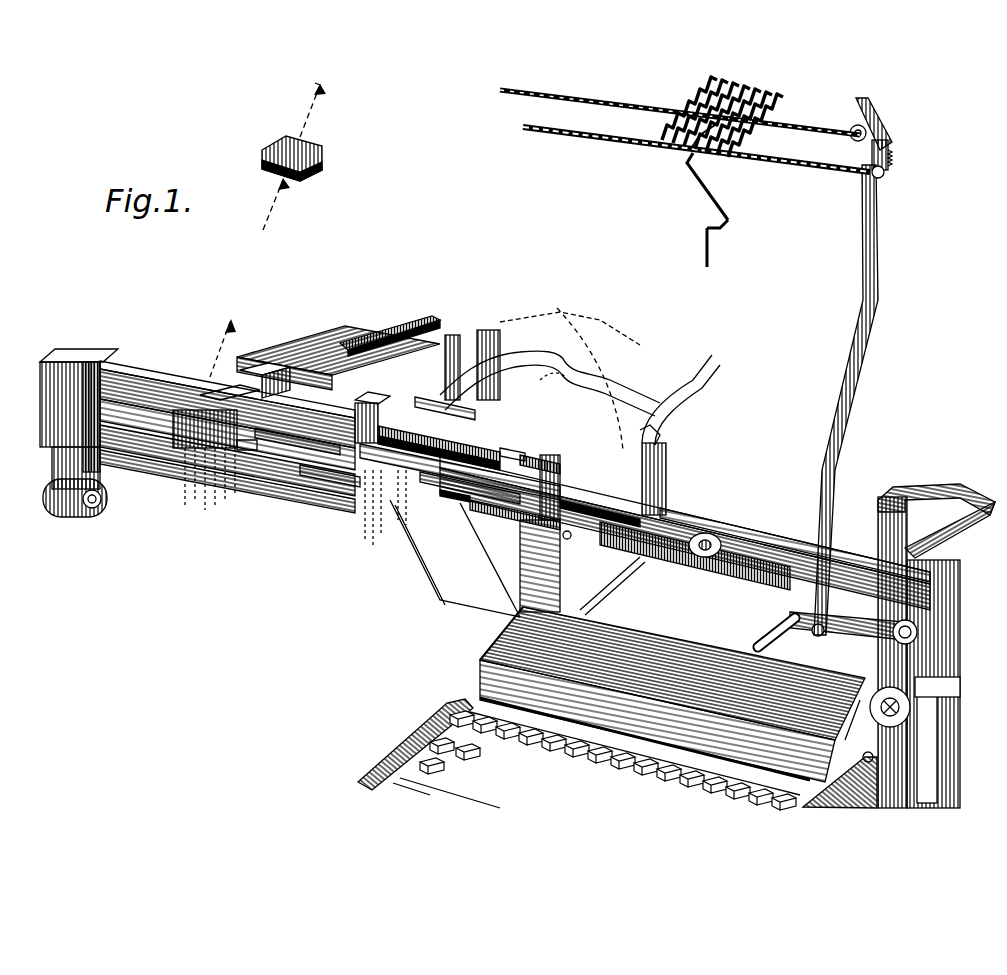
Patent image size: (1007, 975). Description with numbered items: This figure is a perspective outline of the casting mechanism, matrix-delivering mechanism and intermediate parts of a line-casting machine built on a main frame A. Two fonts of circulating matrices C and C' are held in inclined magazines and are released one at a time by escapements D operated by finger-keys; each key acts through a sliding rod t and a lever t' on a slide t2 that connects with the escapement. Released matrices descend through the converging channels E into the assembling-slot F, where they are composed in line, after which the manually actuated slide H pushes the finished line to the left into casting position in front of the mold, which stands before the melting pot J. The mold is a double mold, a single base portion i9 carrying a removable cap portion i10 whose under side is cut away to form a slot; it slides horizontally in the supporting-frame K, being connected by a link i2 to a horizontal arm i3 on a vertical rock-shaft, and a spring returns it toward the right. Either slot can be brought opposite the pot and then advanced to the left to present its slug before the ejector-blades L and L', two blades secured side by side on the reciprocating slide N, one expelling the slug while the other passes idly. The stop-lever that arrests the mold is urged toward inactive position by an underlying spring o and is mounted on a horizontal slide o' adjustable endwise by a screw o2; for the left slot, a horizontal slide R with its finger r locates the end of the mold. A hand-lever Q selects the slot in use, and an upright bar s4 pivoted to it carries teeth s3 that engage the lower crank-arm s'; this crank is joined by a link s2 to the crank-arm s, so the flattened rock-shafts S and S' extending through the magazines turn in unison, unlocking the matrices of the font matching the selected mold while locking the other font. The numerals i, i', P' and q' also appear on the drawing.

The supporting-frame K is at (197, 431).
The ejector-blade L is at (216, 431).
The reciprocating slide N is at (338, 352).
The ejector-blade L' is at (275, 372).
The horizontal arm i3 is at (420, 326).
The link i2 is at (300, 443).
The bar i is at (330, 495).
The melting pot J is at (407, 412).
The cap portion i10 is at (439, 443).
The bar i' is at (460, 494).
The spring o is at (451, 520).
The base portion i9 is at (467, 513).
The horizontal slide o' is at (515, 527).
The screw o2 is at (567, 539).
The converging channels E is at (638, 411).
The horizontal slide R is at (545, 460).
The finger r is at (540, 457).
The assembling-slot F is at (590, 490).
The manually actuated slide H is at (692, 518).
The rack P' is at (695, 559).
The main frame A is at (899, 646).
The hand-lever Q is at (860, 633).
The handle q' is at (789, 640).
The upright bar s4 is at (880, 273).
The teeth s3 is at (880, 193).
The link s2 is at (880, 121).
The crank-arm s is at (849, 118).
The crank-arm s' is at (896, 171).
The horizontal rock-shaft S is at (674, 99).
The horizontal rock-shaft S' is at (684, 149).
The matrices C is at (706, 89).
The matrices C' is at (744, 93).
The escapements D is at (725, 136).
The slide t2 is at (716, 203).
The lever t' is at (730, 235).
The sliding rod t is at (729, 252).